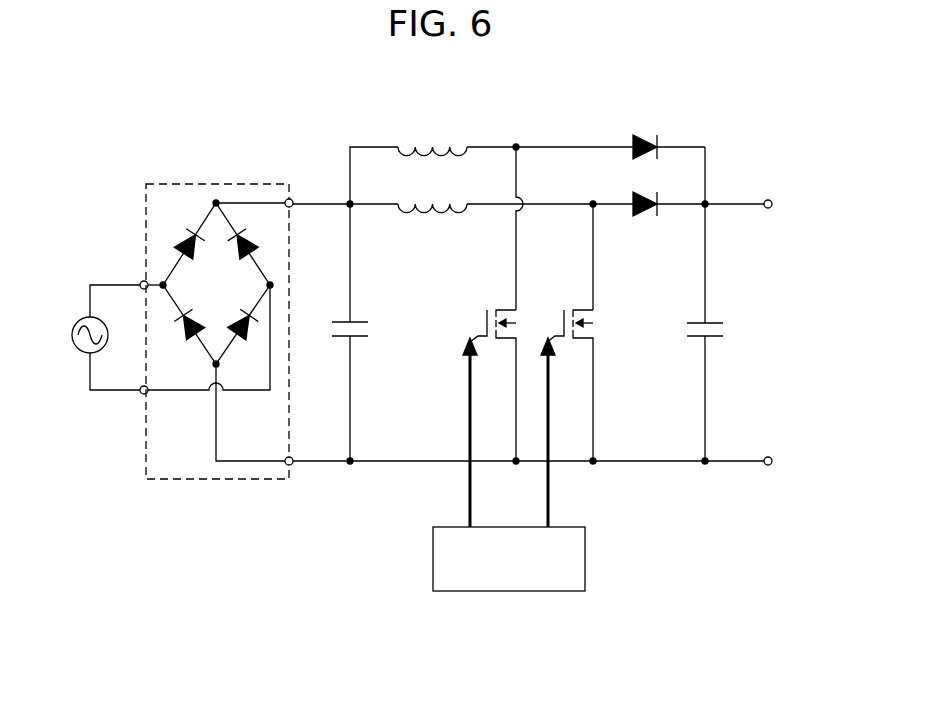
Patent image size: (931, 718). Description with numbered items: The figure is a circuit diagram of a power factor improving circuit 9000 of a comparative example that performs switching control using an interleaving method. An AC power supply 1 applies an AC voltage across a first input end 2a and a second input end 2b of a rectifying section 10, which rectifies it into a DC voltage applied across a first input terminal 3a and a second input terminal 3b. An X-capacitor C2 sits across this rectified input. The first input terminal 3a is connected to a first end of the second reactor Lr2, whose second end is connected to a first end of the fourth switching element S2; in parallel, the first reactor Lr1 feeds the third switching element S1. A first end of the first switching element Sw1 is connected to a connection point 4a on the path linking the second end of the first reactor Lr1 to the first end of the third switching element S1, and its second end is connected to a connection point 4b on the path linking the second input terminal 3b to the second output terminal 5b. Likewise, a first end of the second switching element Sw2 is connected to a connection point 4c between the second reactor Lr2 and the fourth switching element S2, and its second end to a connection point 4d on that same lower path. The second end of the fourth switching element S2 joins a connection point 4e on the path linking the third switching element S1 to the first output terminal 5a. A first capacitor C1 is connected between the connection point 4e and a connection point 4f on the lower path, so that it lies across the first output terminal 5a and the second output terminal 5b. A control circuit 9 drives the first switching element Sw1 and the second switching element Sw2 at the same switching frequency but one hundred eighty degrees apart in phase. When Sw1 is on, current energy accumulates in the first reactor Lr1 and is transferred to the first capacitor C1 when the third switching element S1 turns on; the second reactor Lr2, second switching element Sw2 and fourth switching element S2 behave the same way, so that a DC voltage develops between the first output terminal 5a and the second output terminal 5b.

The power factor improving circuit 9000 is at (66, 112).
The AC power supply 1 is at (77, 322).
The first input end 2a is at (141, 282).
The second input end 2b is at (141, 393).
The rectifying section 10 is at (218, 184).
The first input terminal 3a is at (292, 200).
The second input terminal 3b is at (292, 465).
The first reactor Lr1 is at (432, 137).
The second reactor Lr2 is at (432, 194).
The X-capacitor C2 is at (369, 329).
The first capacitor C1 is at (725, 329).
The connection point 4a is at (517, 145).
The connection point 4b is at (515, 465).
The connection point 4c is at (592, 203).
The connection point 4d is at (593, 465).
The connection point 4e is at (707, 202).
The connection point 4f is at (706, 465).
The first switching element Sw1 is at (488, 371).
The second switching element Sw2 is at (565, 371).
The third switching element S1 is at (641, 135).
The fourth switching element S2 is at (641, 217).
The first output terminal 5a is at (770, 209).
The second output terminal 5b is at (769, 457).
The control circuit 9 is at (505, 592).